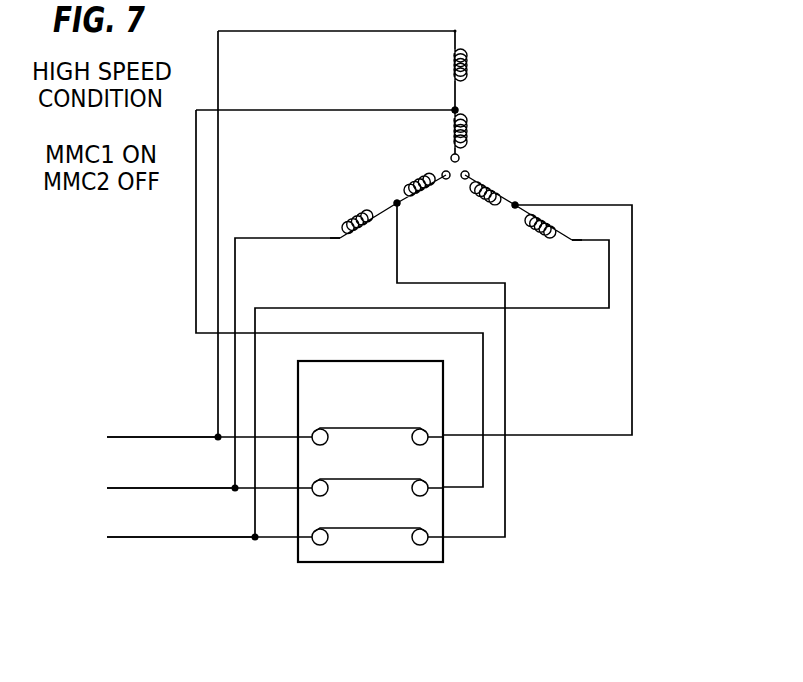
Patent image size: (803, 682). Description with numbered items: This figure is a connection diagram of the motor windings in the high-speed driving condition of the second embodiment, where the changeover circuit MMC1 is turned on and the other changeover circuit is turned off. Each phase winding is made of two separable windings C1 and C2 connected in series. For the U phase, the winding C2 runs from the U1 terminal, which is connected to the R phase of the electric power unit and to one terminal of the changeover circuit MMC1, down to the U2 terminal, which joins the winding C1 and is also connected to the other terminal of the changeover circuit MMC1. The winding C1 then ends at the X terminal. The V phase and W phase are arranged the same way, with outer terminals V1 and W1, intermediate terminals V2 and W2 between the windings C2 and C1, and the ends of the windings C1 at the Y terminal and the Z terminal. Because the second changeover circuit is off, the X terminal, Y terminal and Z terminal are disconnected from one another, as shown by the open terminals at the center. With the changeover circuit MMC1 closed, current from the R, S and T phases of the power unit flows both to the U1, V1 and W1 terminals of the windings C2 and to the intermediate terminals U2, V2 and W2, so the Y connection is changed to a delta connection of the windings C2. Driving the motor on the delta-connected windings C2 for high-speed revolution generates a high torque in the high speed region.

The U1 terminal U1 is at (469, 30).
The U2 terminal U2 is at (469, 103).
The V1 terminal V1 is at (329, 253).
The V2 terminal V2 is at (385, 190).
The W1 terminal W1 is at (586, 255).
The W2 terminal W2 is at (530, 193).
The X terminal X is at (447, 155).
The Y terminal Y is at (446, 187).
The Z terminal Z is at (472, 166).
The winding C1 is at (453, 173).
The winding C2 is at (456, 152).
The changeover circuit MMC1 is at (370, 461).
The R phase R is at (152, 437).
The S phase S is at (161, 487).
The T phase T is at (171, 535).